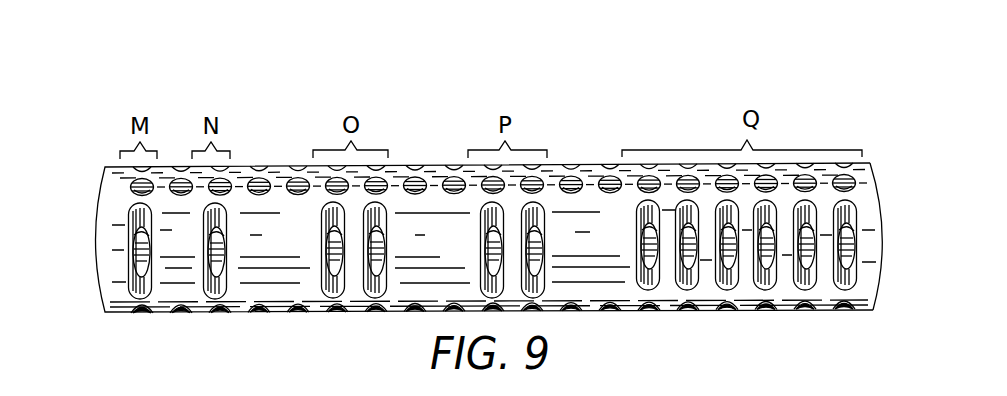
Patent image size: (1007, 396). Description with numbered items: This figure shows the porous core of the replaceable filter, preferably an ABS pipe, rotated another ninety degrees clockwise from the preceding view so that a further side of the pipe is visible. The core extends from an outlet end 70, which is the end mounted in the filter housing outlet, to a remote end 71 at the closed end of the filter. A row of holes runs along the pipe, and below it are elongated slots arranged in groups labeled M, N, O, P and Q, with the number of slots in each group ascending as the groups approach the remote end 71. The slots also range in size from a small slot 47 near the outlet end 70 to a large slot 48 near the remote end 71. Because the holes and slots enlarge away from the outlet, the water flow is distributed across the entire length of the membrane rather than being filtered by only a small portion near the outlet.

The small slot 47 is at (137, 265).
The large slot 48 is at (842, 255).
The outlet end 70 is at (95, 267).
The remote end 71 is at (883, 212).